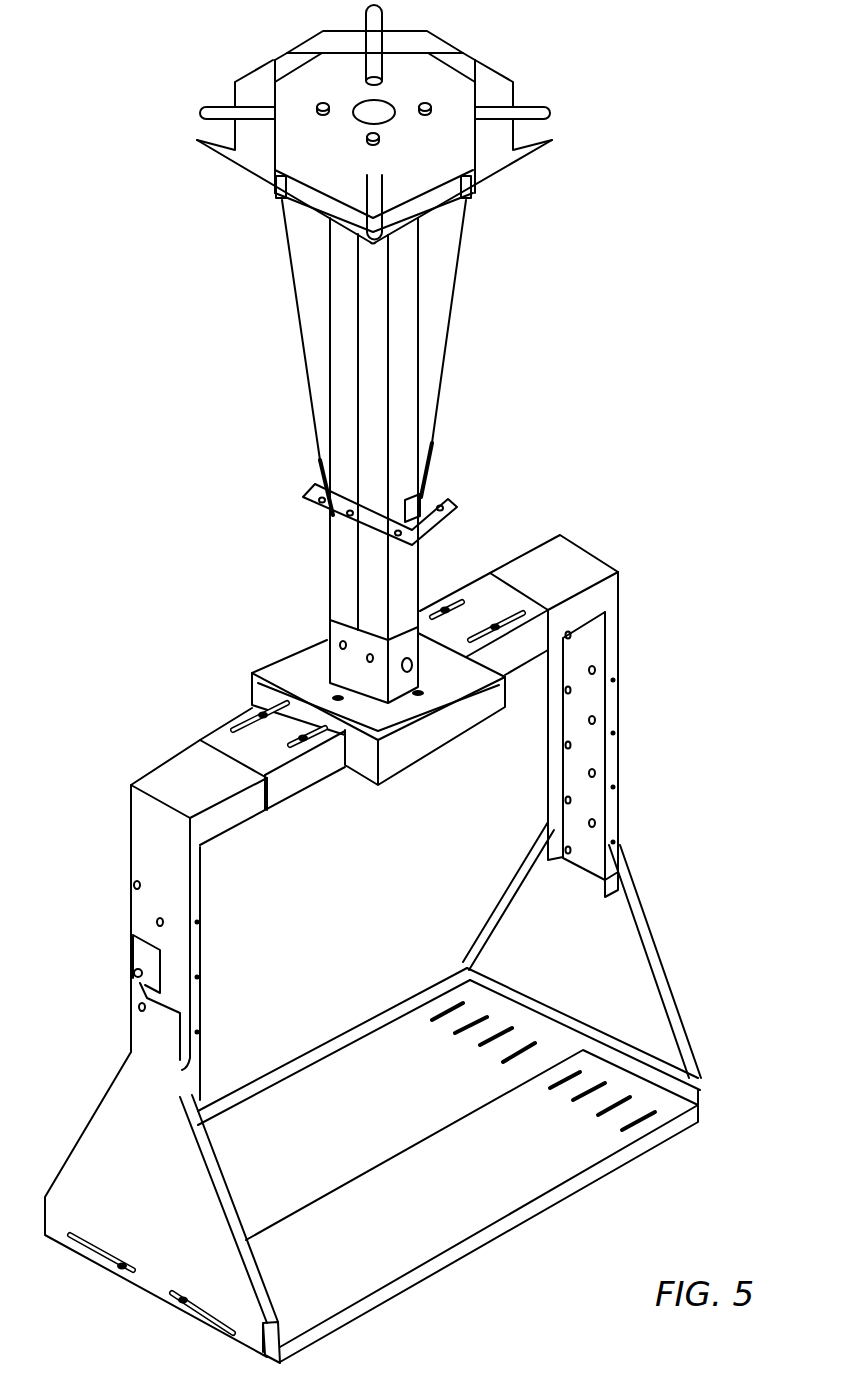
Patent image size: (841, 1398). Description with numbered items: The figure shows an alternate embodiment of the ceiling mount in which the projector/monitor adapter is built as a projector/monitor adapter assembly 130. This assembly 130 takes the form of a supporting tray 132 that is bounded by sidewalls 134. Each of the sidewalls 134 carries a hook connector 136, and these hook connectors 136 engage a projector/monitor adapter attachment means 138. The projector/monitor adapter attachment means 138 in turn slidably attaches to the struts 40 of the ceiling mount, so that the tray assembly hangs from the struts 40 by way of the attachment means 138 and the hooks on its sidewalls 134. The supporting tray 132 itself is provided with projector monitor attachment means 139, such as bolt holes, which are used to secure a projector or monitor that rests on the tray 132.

The strut 40 is at (432, 560).
The projector/monitor adapter assembly 130 is at (648, 1165).
The supporting tray 132 is at (503, 1233).
The sidewall 134 is at (95, 1112).
The hook connector 136 is at (140, 973).
The projector/monitor adapter attachment means 138 is at (170, 763).
The projector monitor attachment means 139 is at (423, 1068).